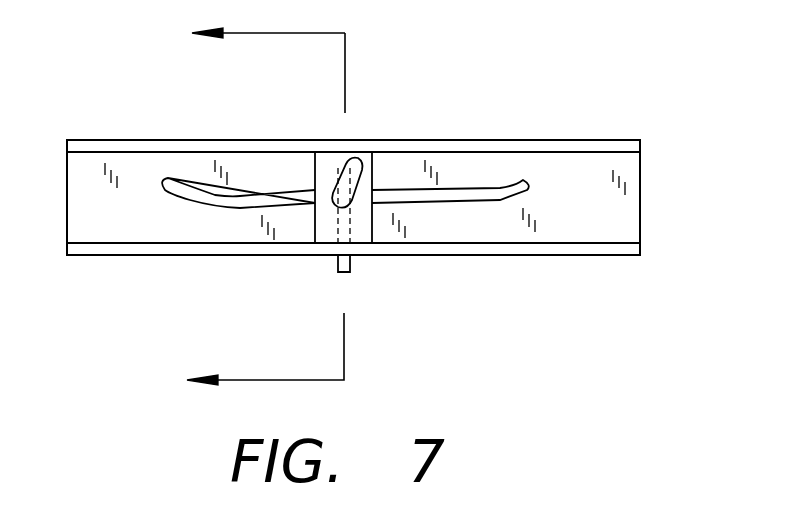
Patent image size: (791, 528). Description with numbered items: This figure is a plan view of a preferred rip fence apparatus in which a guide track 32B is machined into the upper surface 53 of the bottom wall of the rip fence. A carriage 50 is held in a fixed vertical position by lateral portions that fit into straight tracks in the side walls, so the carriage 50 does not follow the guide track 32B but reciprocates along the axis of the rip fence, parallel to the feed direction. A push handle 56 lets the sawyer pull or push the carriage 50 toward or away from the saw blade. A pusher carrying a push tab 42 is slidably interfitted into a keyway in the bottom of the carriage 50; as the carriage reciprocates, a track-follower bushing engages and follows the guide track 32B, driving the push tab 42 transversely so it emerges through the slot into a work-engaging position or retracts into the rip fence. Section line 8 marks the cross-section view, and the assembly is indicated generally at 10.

The section line 8- 8 is at (246, 206).
The display assembly 10 is at (436, 62).
The upper surface 53 is at (353, 197).
The track 32B is at (534, 165).
The carriage 50 is at (303, 158).
The push handle 56 is at (341, 154).
The push tab 42 is at (338, 262).